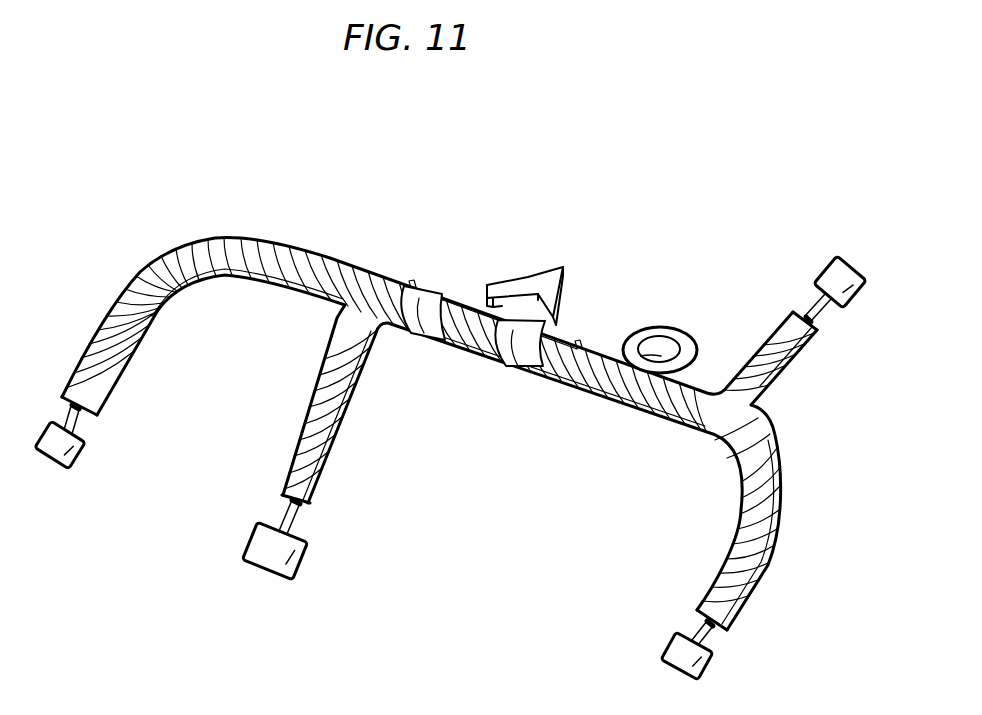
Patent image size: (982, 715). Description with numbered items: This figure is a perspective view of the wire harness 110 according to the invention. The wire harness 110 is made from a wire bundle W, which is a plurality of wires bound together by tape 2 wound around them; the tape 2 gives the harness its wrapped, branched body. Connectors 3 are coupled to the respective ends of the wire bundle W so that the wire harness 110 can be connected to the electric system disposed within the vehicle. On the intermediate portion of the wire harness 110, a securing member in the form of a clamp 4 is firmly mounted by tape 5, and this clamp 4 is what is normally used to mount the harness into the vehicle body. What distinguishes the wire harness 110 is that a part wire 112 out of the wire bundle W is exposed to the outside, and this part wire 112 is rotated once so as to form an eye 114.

The wire harness 110 is at (386, 233).
The tape 2 is at (118, 317).
The connector 3 is at (73, 462).
The clamp 4 is at (520, 278).
The tape 5 is at (423, 318).
The part wire 112 is at (673, 328).
The eye 114 is at (643, 353).
The wire bundle W is at (77, 430).